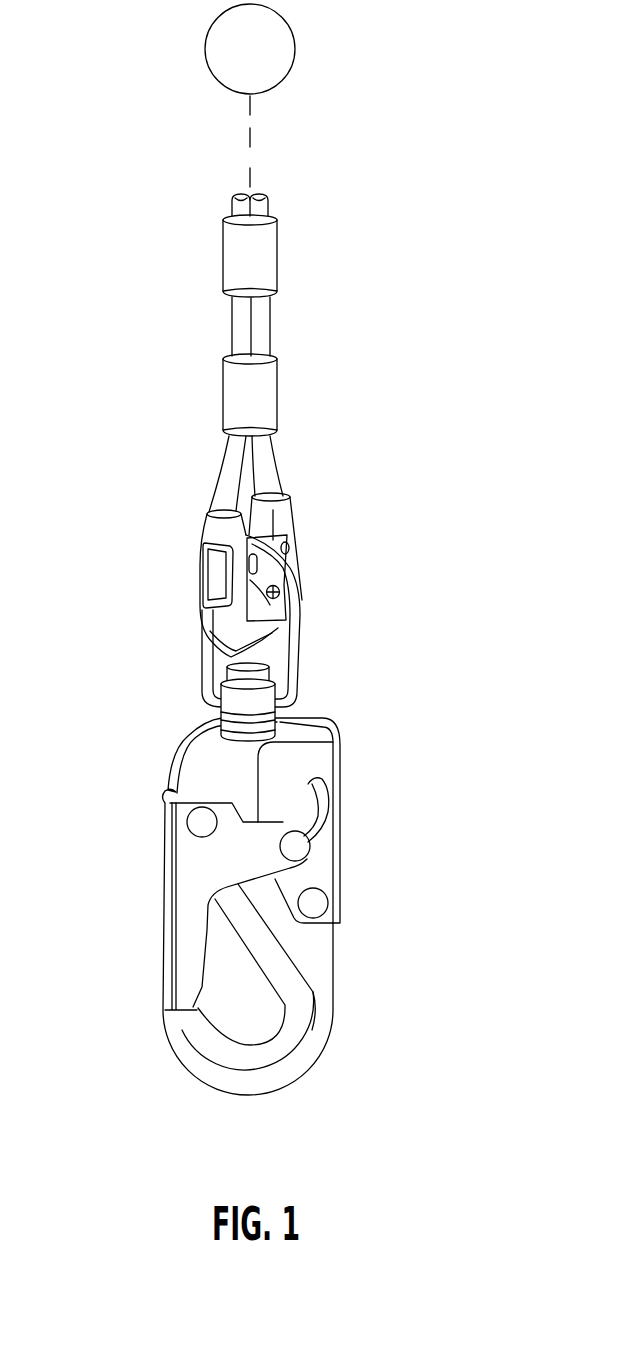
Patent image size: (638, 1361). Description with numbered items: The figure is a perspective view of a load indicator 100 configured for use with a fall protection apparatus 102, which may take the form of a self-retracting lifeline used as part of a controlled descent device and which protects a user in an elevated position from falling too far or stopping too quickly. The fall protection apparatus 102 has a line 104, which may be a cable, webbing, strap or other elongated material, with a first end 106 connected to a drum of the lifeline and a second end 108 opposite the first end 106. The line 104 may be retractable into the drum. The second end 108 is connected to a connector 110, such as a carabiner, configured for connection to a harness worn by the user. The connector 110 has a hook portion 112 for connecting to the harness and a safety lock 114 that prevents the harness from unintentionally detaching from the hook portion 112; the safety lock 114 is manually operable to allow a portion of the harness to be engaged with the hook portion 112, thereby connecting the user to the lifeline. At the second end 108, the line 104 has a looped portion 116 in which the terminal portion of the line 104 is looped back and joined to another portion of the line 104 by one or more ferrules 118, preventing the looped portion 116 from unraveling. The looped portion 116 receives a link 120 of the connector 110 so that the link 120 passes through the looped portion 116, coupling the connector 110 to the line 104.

The load indicator 100 is at (307, 561).
The fall protection apparatus 102 is at (293, 63).
The line 104 is at (270, 320).
The first end 106 is at (243, 105).
The second end 108 is at (175, 586).
The connector 110 is at (371, 746).
The hook portion 112 is at (257, 1084).
The safety lock 114 is at (192, 889).
The looped portion 116 is at (277, 465).
The ferrules 118 is at (258, 250).
The link 120 is at (290, 632).